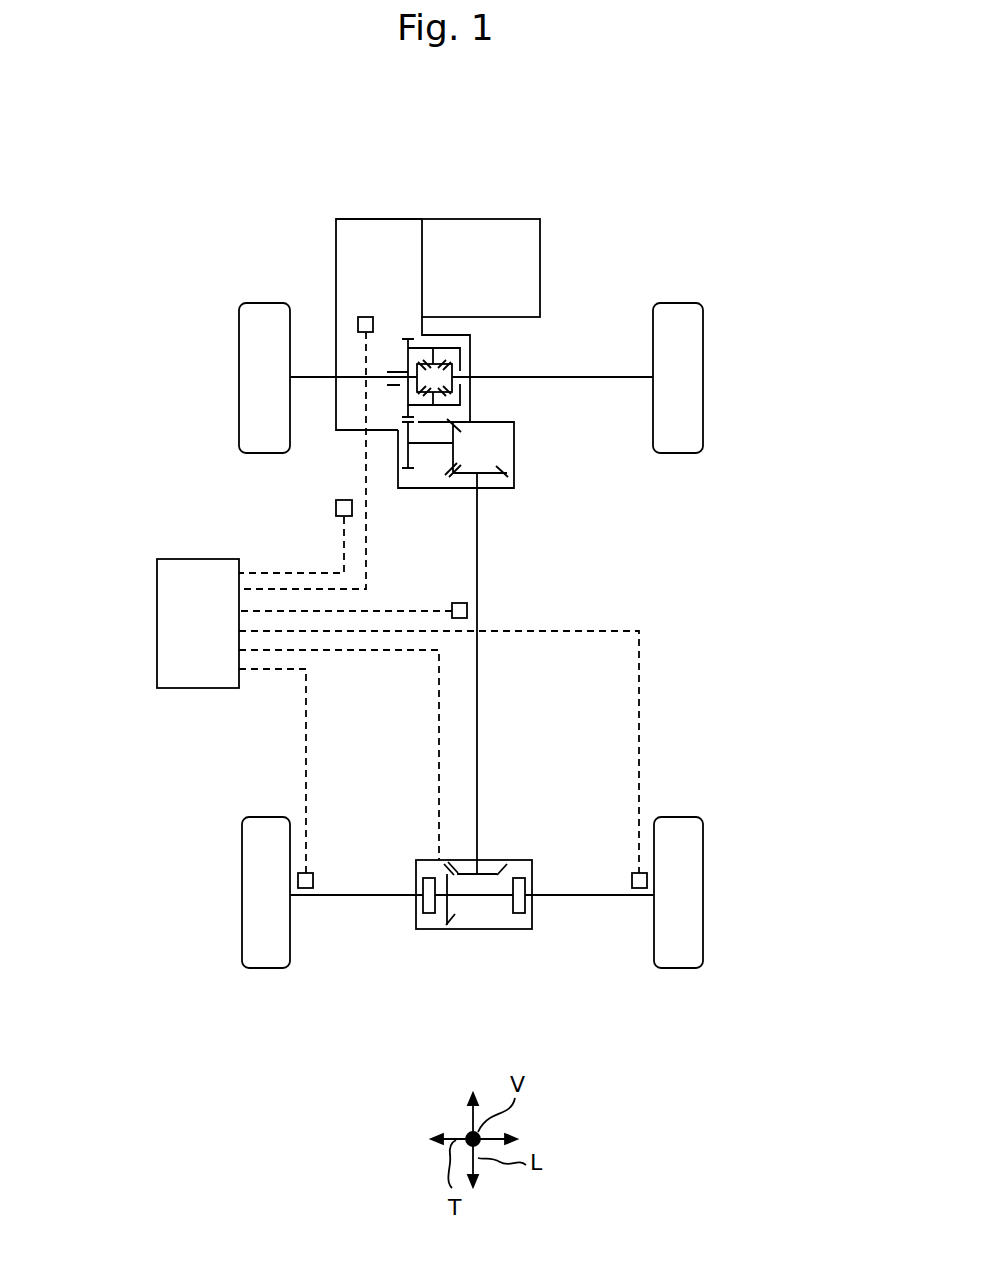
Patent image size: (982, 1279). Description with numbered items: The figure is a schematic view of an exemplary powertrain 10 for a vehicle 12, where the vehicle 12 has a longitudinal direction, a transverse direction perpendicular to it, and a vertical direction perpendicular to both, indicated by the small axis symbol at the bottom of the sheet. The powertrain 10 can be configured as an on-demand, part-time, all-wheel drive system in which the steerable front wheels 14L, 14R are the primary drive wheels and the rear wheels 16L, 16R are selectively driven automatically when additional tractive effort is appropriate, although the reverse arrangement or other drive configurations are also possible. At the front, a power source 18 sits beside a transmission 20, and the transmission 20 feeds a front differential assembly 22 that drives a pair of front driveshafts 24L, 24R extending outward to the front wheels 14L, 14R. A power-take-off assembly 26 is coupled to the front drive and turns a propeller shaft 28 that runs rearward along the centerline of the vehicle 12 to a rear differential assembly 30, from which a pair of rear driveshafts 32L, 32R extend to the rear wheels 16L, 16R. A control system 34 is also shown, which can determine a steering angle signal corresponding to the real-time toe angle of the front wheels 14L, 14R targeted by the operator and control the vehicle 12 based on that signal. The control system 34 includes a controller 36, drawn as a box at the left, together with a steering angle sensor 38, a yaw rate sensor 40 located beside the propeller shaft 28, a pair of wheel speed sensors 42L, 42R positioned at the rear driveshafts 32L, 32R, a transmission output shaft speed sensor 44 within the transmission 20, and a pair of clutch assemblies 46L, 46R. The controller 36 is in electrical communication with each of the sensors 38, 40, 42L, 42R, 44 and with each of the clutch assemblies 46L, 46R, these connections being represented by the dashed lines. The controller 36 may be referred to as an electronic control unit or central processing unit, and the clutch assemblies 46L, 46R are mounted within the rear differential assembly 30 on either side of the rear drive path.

The powertrain 10 is at (540, 122).
The vehicle 12 is at (192, 128).
The front wheel 14L is at (263, 303).
The front wheel 14R is at (677, 303).
The rear wheel 16L is at (263, 968).
The rear wheel 16R is at (680, 968).
The power source 18 is at (480, 219).
The transmission 20 is at (370, 219).
The front differential assembly 22 is at (460, 352).
The front driveshaft 24L is at (318, 377).
The front driveshaft 24R is at (600, 377).
The power-take-off assembly 26 is at (514, 455).
The propeller shaft 28 is at (477, 745).
The rear differential assembly 30 is at (476, 929).
The rear driveshaft 32L is at (357, 897).
The rear driveshaft 32R is at (590, 897).
The control system 34 is at (130, 496).
The controller 36 is at (211, 636).
The steering angle sensor 38 is at (336, 506).
The yaw rate sensor 40 is at (458, 603).
The wheel speed sensor 42L is at (313, 880).
The wheel speed sensor 42R is at (632, 880).
The transmission output shaft speed sensor 44 is at (366, 317).
The clutch assembly 46L is at (432, 915).
The clutch assembly 46R is at (516, 915).